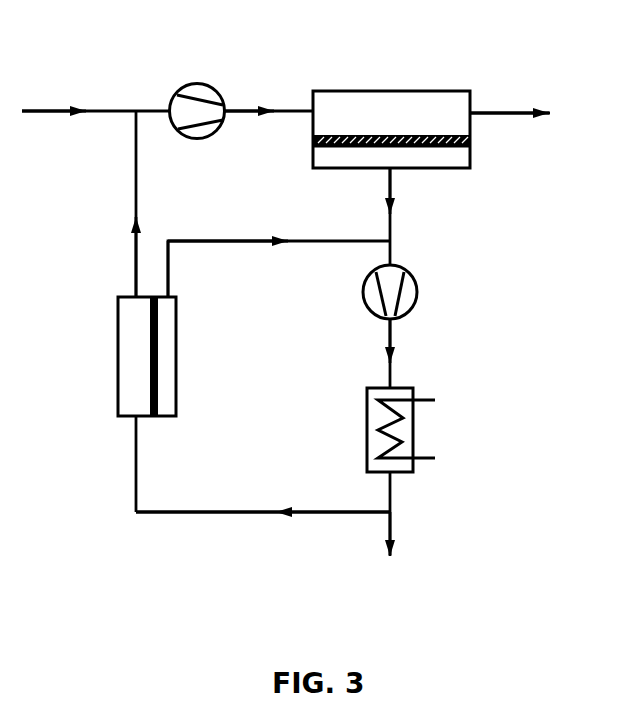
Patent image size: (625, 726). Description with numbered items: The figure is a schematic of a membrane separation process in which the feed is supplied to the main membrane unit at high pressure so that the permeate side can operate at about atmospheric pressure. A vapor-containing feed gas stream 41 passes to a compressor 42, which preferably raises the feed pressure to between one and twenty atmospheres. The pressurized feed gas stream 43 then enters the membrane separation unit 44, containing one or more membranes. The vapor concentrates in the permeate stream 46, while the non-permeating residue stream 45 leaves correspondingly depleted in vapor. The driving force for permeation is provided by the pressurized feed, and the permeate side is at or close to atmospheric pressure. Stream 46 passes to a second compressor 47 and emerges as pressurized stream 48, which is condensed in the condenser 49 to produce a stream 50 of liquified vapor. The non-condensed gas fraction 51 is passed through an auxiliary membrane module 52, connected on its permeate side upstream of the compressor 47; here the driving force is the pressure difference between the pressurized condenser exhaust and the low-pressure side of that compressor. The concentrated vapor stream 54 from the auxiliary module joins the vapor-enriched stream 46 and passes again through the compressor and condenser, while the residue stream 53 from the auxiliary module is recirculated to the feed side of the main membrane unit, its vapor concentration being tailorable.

The vapor-containing feed gas stream 41 is at (62, 96).
The compressor 42 is at (203, 84).
The pressurized feed gas stream 43 is at (255, 92).
The membrane separation unit 44 is at (381, 91).
The residue stream 45 is at (530, 115).
The permeate stream 46 is at (410, 192).
The compressor 47 is at (417, 282).
The pressurized stream 48 is at (370, 346).
The condenser 49 is at (412, 390).
The stream of liquified vapor 50 is at (389, 554).
The non-condensed gas fraction 51 is at (263, 534).
The auxiliary membrane module 52 is at (118, 391).
The residue stream 53 is at (114, 253).
The concentrated vapor stream 54 is at (230, 253).